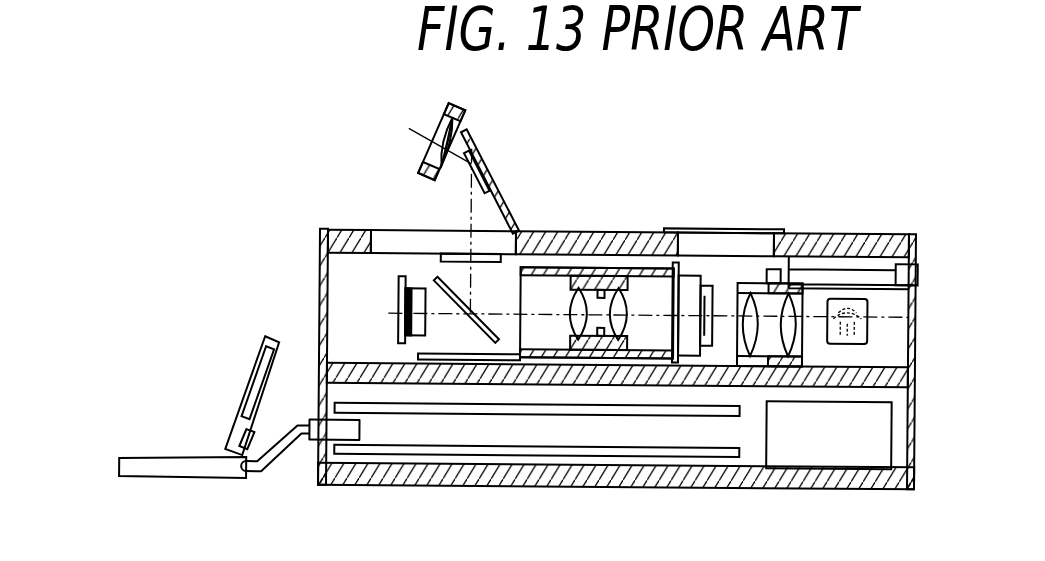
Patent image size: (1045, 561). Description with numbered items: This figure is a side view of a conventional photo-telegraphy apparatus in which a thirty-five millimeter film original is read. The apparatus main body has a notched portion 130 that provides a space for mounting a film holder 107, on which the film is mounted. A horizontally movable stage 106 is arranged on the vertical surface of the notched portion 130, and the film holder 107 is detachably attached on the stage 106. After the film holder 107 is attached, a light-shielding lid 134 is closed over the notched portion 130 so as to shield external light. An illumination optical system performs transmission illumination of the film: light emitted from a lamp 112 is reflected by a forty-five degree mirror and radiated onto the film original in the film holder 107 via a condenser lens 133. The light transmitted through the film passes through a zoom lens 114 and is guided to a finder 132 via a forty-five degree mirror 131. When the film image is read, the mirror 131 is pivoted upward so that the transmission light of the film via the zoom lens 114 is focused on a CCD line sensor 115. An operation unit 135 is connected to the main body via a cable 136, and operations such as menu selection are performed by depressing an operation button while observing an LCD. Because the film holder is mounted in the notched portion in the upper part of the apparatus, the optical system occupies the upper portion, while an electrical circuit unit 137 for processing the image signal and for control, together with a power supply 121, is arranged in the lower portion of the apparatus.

The stage 106 is at (697, 272).
The film holder 107 is at (703, 275).
The lamp 112 is at (867, 322).
The zoom lens 114 is at (606, 268).
The CCD line sensor 115 is at (398, 296).
The power supply 121 is at (822, 455).
The notched portion 130 is at (722, 352).
The 45° mirror 131 is at (490, 315).
The finder 132 is at (462, 132).
The condenser lens 133 is at (752, 282).
The light-shielding lid 134 is at (784, 232).
The operation unit 135 is at (265, 338).
The cable 136 is at (272, 472).
The electrical circuit unit 137 is at (460, 435).